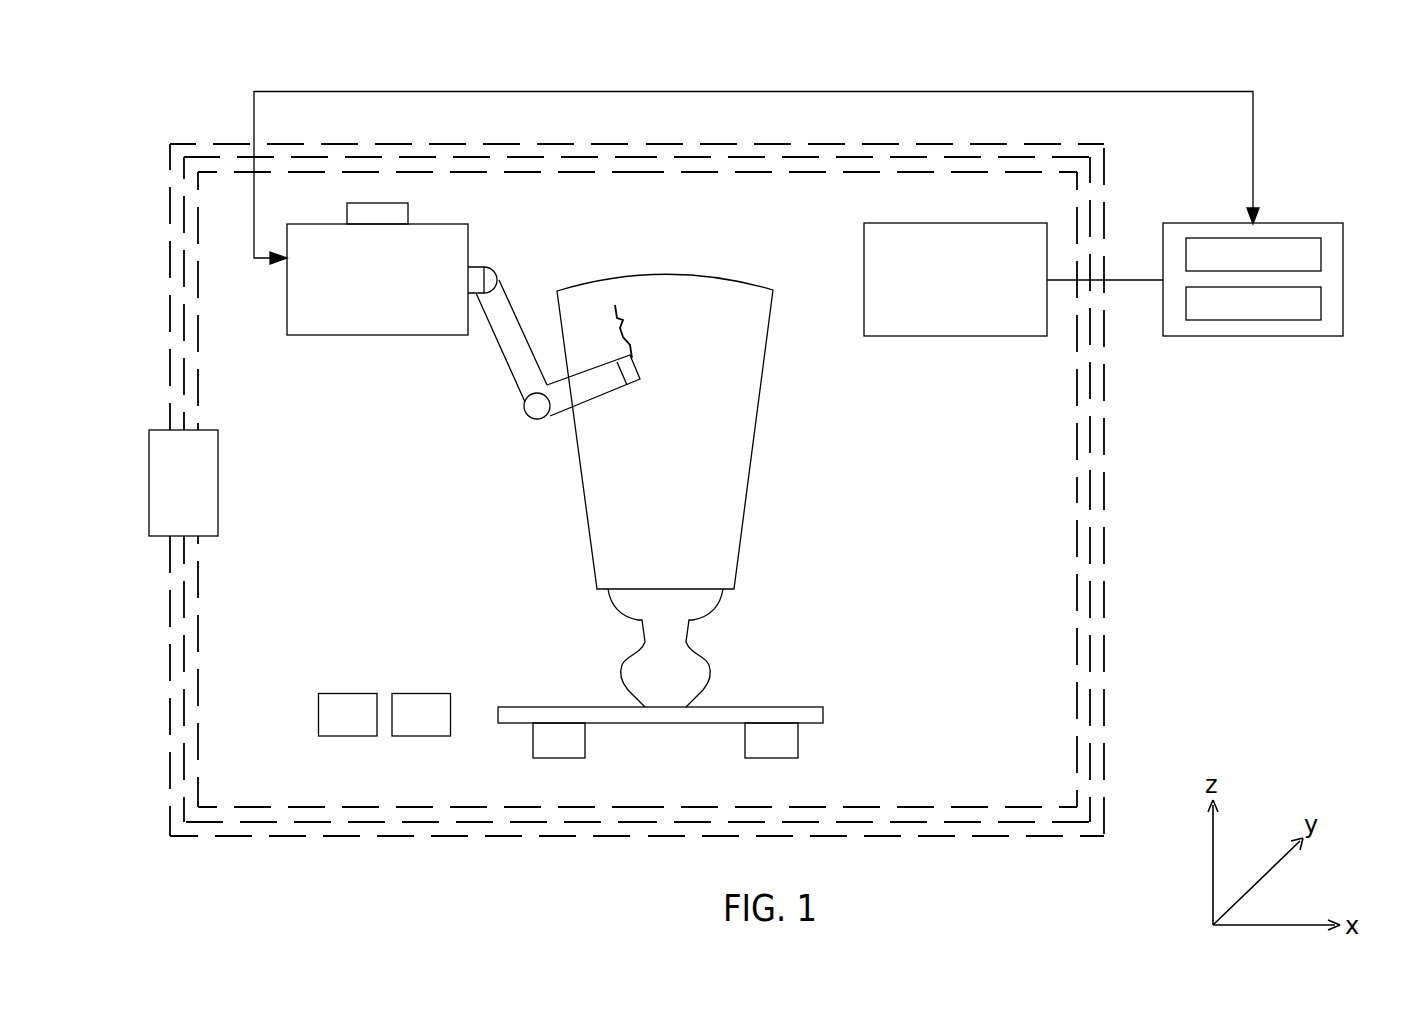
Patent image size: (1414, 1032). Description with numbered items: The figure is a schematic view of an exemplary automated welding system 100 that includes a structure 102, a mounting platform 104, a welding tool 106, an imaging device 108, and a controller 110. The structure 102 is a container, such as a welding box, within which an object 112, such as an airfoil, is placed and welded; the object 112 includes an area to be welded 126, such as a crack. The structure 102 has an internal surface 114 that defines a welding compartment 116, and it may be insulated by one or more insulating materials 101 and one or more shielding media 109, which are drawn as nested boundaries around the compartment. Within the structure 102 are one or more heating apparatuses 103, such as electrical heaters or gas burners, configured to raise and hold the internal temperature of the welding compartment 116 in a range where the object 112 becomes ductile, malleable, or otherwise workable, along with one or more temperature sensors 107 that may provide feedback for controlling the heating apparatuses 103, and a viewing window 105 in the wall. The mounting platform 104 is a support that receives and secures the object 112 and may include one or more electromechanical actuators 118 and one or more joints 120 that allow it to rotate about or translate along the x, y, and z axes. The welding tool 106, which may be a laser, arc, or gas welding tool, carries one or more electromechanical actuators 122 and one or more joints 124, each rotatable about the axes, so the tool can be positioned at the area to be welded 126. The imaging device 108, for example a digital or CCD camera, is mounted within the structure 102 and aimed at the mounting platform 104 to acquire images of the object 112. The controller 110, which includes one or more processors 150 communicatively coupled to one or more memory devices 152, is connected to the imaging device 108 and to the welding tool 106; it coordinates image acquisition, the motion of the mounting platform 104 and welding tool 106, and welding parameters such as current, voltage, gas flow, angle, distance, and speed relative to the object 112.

The automated welding system 100 is at (1175, 72).
The insulating materials 101 is at (226, 150).
The structure 102 is at (170, 258).
The heating apparatuses 103 is at (348, 715).
The mounting platform 104 is at (823, 713).
The viewing window 105 is at (218, 483).
The welding tool 106 is at (378, 335).
The temperature sensors 107 is at (421, 715).
The imaging device 108 is at (957, 336).
The shielding media 109 is at (184, 712).
The controller 110 is at (1254, 336).
The object 112 is at (755, 428).
The internal surface 114 is at (198, 650).
The welding compartment 116 is at (398, 568).
The electromechanical actuators 118 is at (540, 742).
The joints 120 is at (788, 745).
The electromechanical actuators 122 is at (397, 203).
The joints 124 is at (533, 420).
The area to be welded 126 is at (622, 320).
The processors 150 is at (1321, 255).
The memory devices 152 is at (1321, 303).